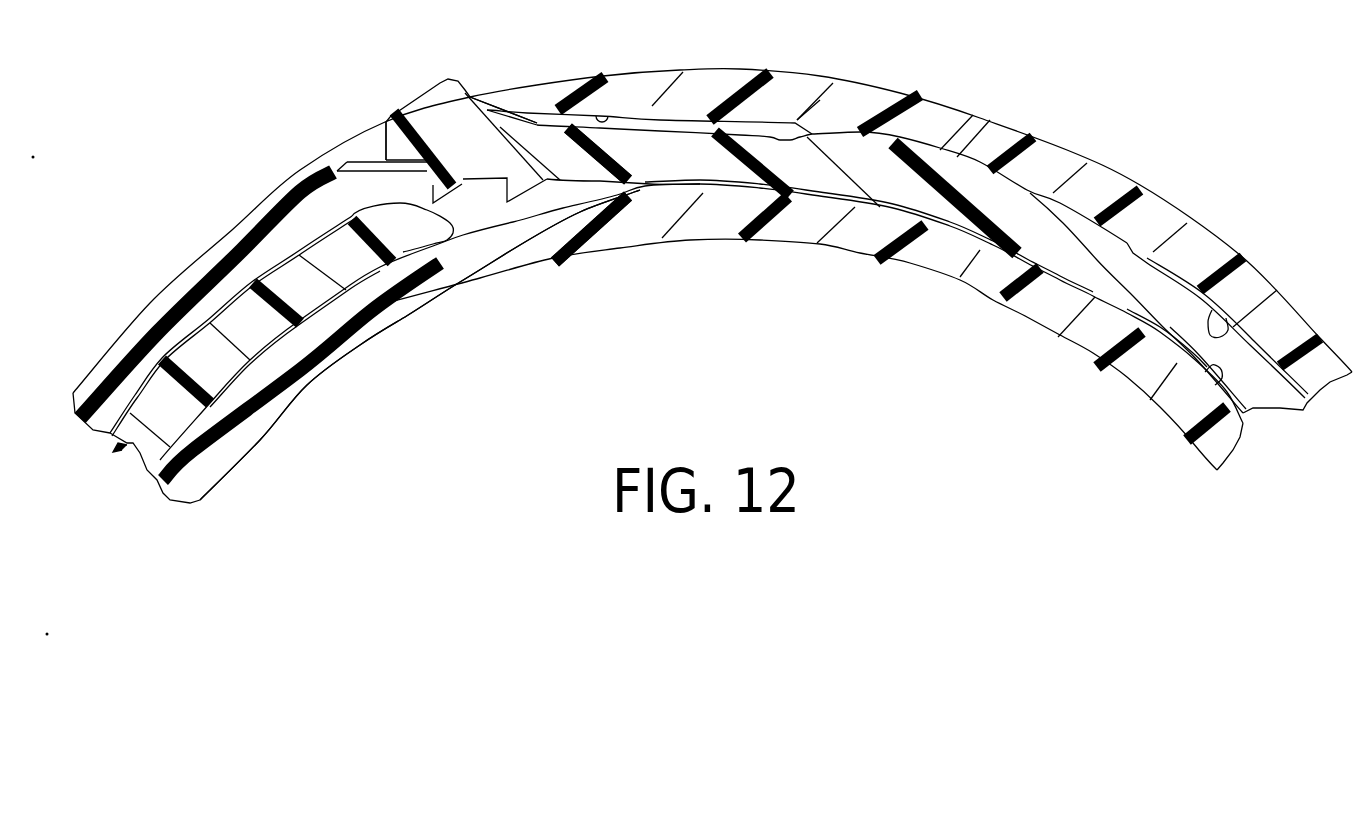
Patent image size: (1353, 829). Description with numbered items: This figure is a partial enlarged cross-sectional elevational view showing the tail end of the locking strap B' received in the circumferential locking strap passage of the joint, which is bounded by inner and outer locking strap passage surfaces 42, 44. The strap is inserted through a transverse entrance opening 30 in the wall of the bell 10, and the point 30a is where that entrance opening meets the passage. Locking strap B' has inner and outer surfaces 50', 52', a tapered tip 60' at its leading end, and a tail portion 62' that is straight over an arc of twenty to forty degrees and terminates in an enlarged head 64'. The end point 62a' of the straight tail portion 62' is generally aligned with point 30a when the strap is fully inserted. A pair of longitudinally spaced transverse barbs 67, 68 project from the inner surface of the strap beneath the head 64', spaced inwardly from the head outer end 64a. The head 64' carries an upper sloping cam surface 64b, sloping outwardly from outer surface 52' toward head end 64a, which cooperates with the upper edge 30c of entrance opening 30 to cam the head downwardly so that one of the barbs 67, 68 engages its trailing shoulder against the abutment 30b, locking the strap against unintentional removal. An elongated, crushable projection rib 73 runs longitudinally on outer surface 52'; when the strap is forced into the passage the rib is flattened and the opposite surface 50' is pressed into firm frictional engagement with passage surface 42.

The bell 10 is at (862, 78).
The entrance opening 30 is at (604, 113).
The point where entrance opening enters the locking strap passage 30a is at (690, 180).
The abutment 30b is at (345, 167).
The upper edge of entrance opening 30c is at (487, 103).
The inner locking strap passage surface 42 is at (1173, 423).
The outer locking strap passage surface 44 is at (1230, 325).
The inner surface of locking strap 50' is at (1131, 362).
The outer surface of locking strap 52' is at (1147, 302).
The tapered tip 60' is at (413, 288).
The tail portion 62' is at (645, 104).
The end point of straight locking strap tail portion 62a' is at (472, 345).
The enlarged head 64' is at (458, 105).
The head outer end 64a is at (382, 128).
The upper sloping cam surface 64b is at (515, 108).
The transverse barb 67 is at (478, 186).
The transverse barb 68 is at (595, 252).
The elongated projection rib 73 is at (975, 117).
The locking strap B' is at (91, 494).